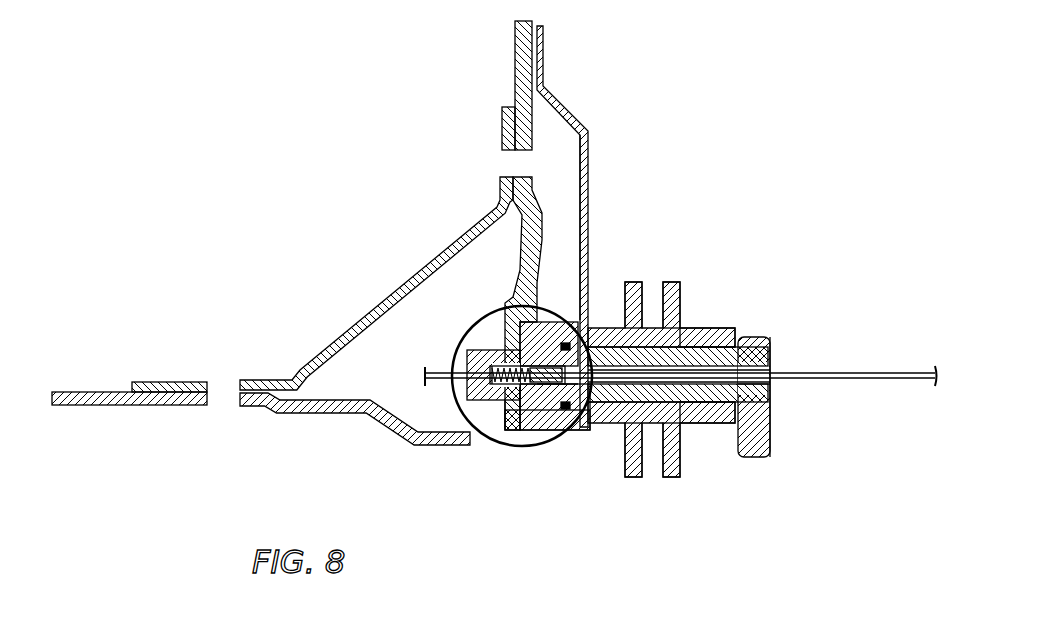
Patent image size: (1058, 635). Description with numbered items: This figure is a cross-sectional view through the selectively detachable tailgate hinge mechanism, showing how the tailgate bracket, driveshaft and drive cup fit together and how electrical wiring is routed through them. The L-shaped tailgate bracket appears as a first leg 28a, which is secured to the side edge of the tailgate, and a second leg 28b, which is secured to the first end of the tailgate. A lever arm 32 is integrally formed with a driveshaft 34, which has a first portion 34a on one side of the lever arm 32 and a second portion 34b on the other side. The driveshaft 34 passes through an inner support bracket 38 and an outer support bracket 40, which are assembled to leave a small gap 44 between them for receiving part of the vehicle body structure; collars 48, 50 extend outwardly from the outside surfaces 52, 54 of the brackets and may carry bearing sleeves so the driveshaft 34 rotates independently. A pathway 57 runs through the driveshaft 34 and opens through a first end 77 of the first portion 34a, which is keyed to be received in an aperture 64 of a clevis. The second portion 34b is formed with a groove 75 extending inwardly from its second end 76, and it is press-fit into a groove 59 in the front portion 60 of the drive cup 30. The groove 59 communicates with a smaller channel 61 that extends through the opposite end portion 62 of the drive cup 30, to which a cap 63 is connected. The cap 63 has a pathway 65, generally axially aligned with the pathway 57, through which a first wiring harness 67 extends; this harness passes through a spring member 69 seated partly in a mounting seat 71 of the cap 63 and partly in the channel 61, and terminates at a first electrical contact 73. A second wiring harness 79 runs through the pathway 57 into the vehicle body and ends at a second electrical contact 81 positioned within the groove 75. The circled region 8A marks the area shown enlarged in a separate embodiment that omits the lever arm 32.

The detail region 8A is at (452, 347).
The first leg 28a is at (522, 43).
The second leg 28b is at (297, 417).
The drive cup 30 is at (548, 320).
The lever arm 32 is at (598, 162).
The driveshaft 34 is at (713, 425).
The first portion 34a is at (708, 340).
The second portion 34b is at (561, 445).
The inner support bracket 38 is at (637, 477).
The outer support bracket 40 is at (680, 470).
The gap 44 is at (653, 308).
The collar 48 is at (612, 327).
The collar 50 is at (710, 335).
The outside surface 52 is at (622, 455).
The outside surface 54 is at (683, 467).
The pathway 57 is at (770, 365).
The groove 59 is at (497, 343).
The front portion 60 is at (528, 243).
The channel 61 is at (506, 405).
The end portion 62 is at (490, 437).
The cap 63 is at (418, 434).
The aperture 64 is at (757, 340).
The pathway 65 is at (372, 312).
The first wiring harness 67 is at (438, 372).
The spring member 69 is at (487, 438).
The mounting seat 71 is at (452, 437).
The first electrical contact 73 is at (505, 338).
The groove 75 is at (588, 328).
The second end 76 is at (550, 410).
The first end 77 is at (772, 388).
The second wiring harness 79 is at (868, 372).
The second electrical contact 81 is at (572, 410).